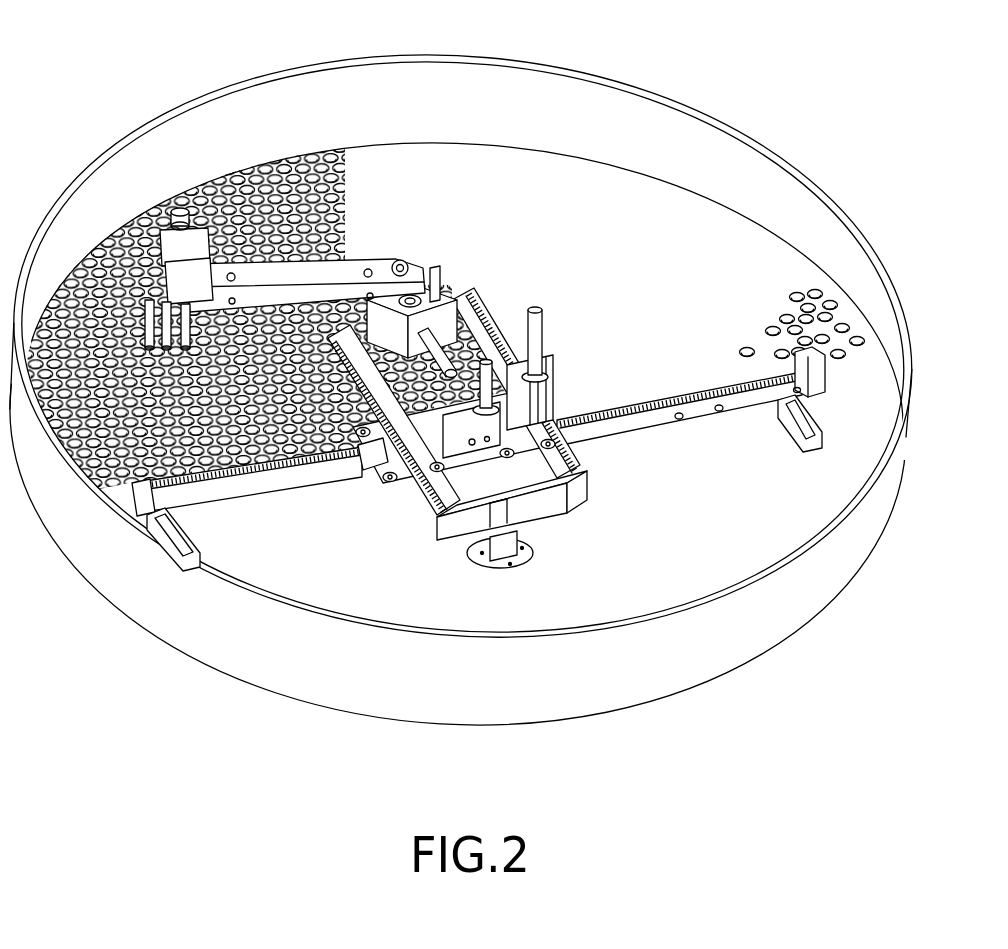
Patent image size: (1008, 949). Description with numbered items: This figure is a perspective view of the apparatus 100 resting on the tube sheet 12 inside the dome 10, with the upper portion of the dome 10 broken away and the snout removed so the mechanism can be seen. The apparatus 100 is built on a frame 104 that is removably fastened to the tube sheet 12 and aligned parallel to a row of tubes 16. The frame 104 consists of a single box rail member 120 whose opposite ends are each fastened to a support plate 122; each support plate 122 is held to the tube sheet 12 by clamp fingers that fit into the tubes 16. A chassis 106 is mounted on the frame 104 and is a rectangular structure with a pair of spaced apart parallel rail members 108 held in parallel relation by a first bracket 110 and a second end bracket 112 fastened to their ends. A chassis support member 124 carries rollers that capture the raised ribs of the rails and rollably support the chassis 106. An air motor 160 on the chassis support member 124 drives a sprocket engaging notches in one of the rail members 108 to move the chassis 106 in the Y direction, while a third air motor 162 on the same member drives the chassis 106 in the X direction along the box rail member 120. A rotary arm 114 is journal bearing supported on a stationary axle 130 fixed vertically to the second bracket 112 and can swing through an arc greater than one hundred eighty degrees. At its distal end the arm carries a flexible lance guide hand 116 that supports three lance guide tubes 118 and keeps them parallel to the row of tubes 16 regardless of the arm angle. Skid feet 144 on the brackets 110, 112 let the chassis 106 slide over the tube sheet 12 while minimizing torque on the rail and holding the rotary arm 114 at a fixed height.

The dome 10 is at (598, 68).
The tube sheet 12 is at (405, 192).
The tubes 16 is at (62, 358).
The apparatus 100 is at (465, 365).
The frame 104 is at (505, 438).
The chassis 106 is at (493, 417).
The rail members 108 is at (430, 504).
The first bracket 110 is at (568, 508).
The second end bracket 112 is at (447, 300).
The rotary arm 114 is at (331, 267).
The flexible lance guide hand 116 is at (132, 250).
The lance guide tubes 118 is at (150, 310).
The box rail member 120 is at (680, 422).
The support plate 122 is at (204, 552).
The chassis support member 124 is at (377, 458).
The stationary axle 130 is at (410, 268).
The skid foot 144 is at (533, 556).
The air motor 160 is at (541, 330).
The third air motor 162 is at (489, 358).